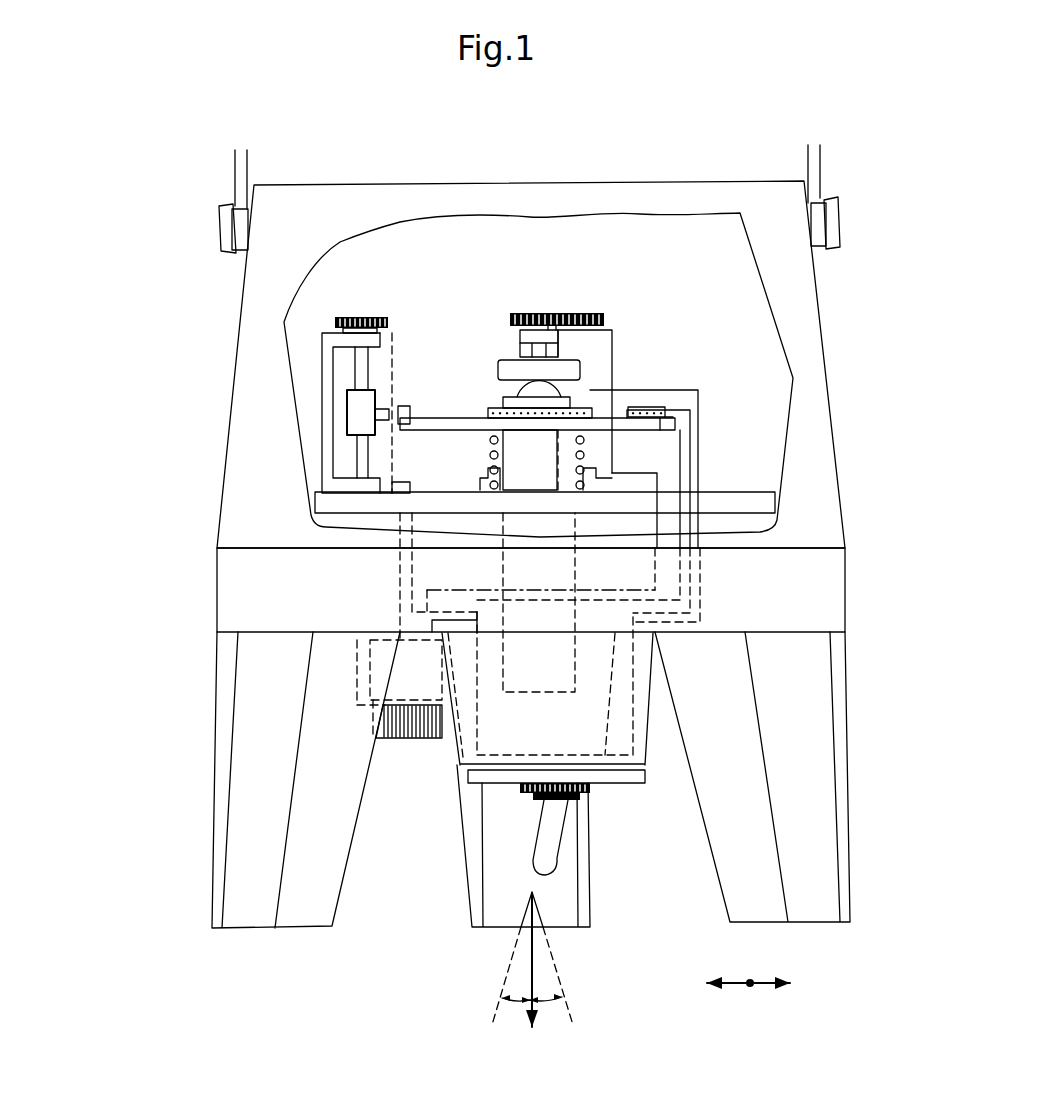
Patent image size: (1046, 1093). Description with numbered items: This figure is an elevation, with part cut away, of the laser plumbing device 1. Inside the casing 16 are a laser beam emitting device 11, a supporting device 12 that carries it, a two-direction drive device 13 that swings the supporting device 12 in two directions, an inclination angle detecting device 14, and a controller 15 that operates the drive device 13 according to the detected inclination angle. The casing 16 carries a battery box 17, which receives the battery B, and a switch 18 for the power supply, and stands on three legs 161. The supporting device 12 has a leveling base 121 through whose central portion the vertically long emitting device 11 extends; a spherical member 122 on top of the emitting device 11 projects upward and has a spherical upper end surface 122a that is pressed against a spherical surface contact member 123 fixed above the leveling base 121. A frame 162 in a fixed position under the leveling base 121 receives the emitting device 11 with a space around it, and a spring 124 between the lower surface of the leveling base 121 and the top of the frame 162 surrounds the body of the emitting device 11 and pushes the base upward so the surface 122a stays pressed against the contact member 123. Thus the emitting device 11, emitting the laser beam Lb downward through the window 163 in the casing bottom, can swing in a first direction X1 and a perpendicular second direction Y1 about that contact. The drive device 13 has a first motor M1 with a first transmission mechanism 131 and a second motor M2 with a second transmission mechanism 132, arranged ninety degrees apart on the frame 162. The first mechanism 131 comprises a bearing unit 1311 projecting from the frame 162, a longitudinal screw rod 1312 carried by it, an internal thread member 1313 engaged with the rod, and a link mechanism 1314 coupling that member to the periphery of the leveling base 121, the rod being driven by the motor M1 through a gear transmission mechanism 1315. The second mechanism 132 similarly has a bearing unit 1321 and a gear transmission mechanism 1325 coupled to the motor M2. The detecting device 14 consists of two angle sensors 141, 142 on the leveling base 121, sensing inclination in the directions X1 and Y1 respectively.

The laser plumbing device 1 is at (170, 290).
The laser beam emitting device 11 is at (500, 522).
The supporting device 12 is at (677, 425).
The leveling base 121 is at (662, 426).
The spherical member 122 is at (502, 398).
The upper end surface 122a is at (560, 382).
The spherical surface contact member 123 is at (500, 362).
The spring 124 is at (489, 457).
The two-direction drive device 13 is at (337, 302).
The first transmission mechanism 131 is at (322, 440).
The bearing unit 1311 is at (327, 483).
The longitudinal screw rod 1312 is at (350, 463).
The internal thread member 1313 is at (345, 400).
The link mechanism 1314 is at (398, 407).
The gear transmission mechanism 1315 is at (370, 316).
The second transmission mechanism 132 is at (608, 308).
The bearing unit 1321 is at (520, 338).
The gear transmission mechanism 1325 is at (553, 313).
The inclination angle detecting device 14 is at (672, 403).
The angle sensor 141 is at (535, 418).
The angle sensor 142 is at (647, 417).
The controller 15 is at (627, 697).
The casing 16 is at (845, 498).
The legs 161 is at (247, 773).
The frame 162 is at (722, 497).
The window 163 is at (593, 777).
The battery box 17 is at (407, 740).
The switch 18 is at (548, 842).
The first motor M1 is at (343, 407).
The second motor M2 is at (613, 338).
The battery B is at (380, 678).
The laser beam Lb is at (530, 977).
The first direction X1 is at (770, 987).
The second direction Y1 is at (750, 980).